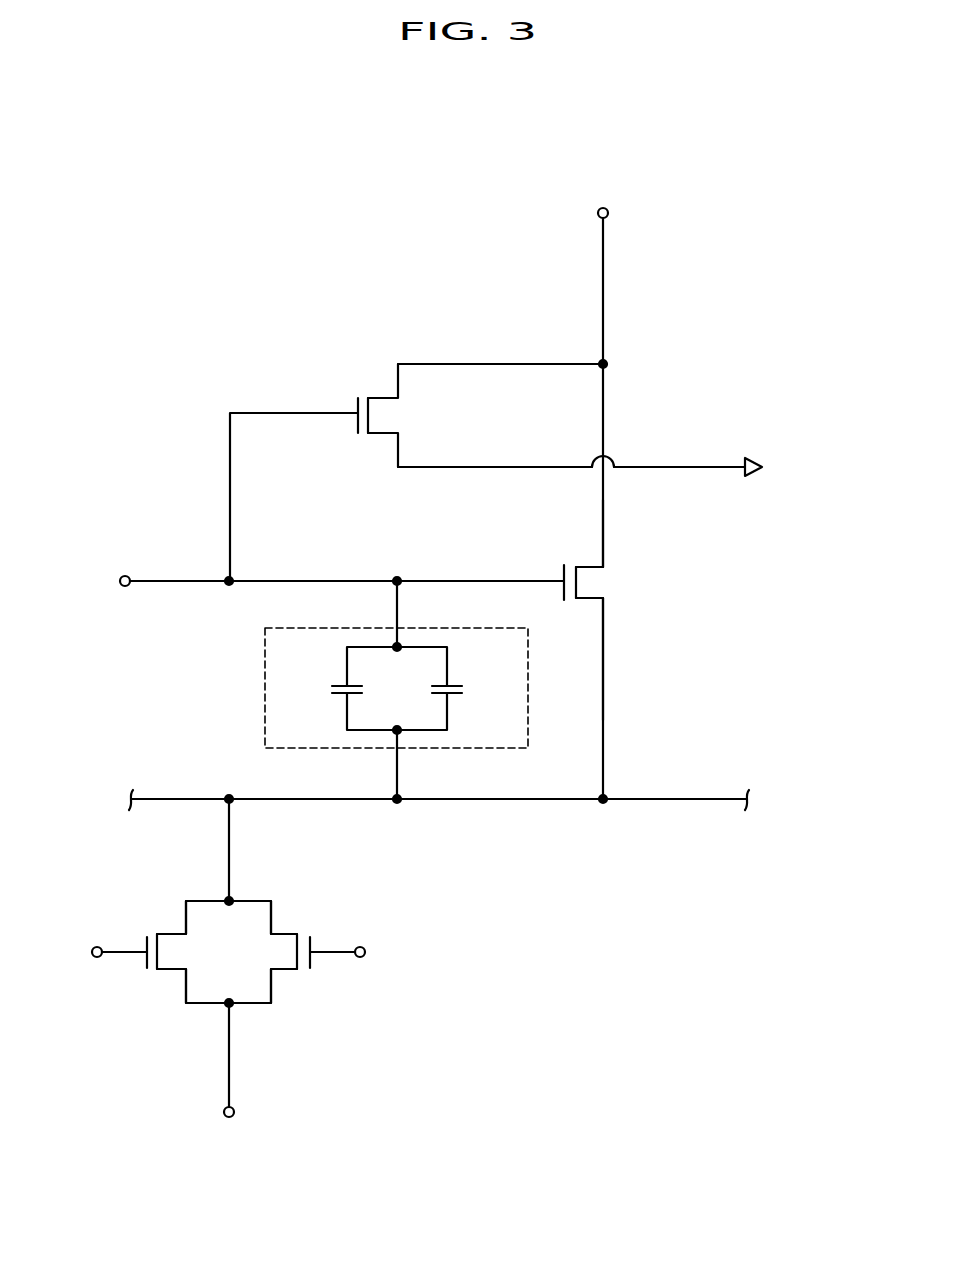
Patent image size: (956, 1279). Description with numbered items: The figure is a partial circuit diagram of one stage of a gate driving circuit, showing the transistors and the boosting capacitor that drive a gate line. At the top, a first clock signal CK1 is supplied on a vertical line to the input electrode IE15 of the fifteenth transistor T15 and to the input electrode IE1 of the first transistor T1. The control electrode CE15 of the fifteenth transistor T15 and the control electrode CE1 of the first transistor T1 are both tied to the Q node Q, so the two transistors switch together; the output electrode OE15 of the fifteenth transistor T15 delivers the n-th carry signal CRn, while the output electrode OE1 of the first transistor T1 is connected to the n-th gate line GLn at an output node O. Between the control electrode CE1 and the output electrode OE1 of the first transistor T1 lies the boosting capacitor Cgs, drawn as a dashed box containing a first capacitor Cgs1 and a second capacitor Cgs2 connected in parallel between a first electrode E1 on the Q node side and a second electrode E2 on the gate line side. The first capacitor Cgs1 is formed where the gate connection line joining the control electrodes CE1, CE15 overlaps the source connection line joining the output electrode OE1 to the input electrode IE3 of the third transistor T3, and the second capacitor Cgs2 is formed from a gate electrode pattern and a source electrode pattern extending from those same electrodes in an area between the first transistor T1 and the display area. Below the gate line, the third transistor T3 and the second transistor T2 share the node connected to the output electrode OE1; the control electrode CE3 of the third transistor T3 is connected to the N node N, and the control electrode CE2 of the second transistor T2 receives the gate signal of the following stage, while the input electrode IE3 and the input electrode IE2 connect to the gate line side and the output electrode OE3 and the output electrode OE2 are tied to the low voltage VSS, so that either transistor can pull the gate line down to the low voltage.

The first clock signal CK1 is at (607, 273).
The n-th carry signal CRn is at (698, 468).
The fifteenth transistor T15 is at (389, 415).
The input electrode of the fifteenth transistor IE15 is at (398, 364).
The control electrode of the fifteenth transistor CE15 is at (286, 413).
The output electrode of the fifteenth transistor OE15 is at (398, 467).
The Q node Q is at (164, 582).
The first transistor T1 is at (589, 582).
The input electrode of the first transistor IE1 is at (603, 540).
The control electrode of the first transistor CE1 is at (508, 581).
The output electrode of the first transistor OE1 is at (603, 663).
The boosting capacitor Cgs is at (265, 690).
The first capacitor Cgs1 is at (337, 688).
The second capacitor Cgs2 is at (457, 688).
The first electrode of capacitor E1 is at (397, 647).
The second electrode of capacitor E2 is at (397, 730).
The n-th gate line GLn is at (690, 799).
The output node O is at (602, 816).
The third transistor T3 is at (188, 952).
The second transistor T2 is at (269, 952).
The input electrode of the third transistor IE3 is at (184, 901).
The input electrode of the second transistor IE2 is at (272, 901).
The output electrode of the third transistor OE3 is at (184, 1003).
The output electrode of the second transistor OE2 is at (272, 1003).
The control electrode of the third transistor CE3 is at (122, 952).
The control electrode of the second transistor CE2 is at (333, 952).
The N node N is at (86, 953).
The low voltage VSS is at (227, 1076).